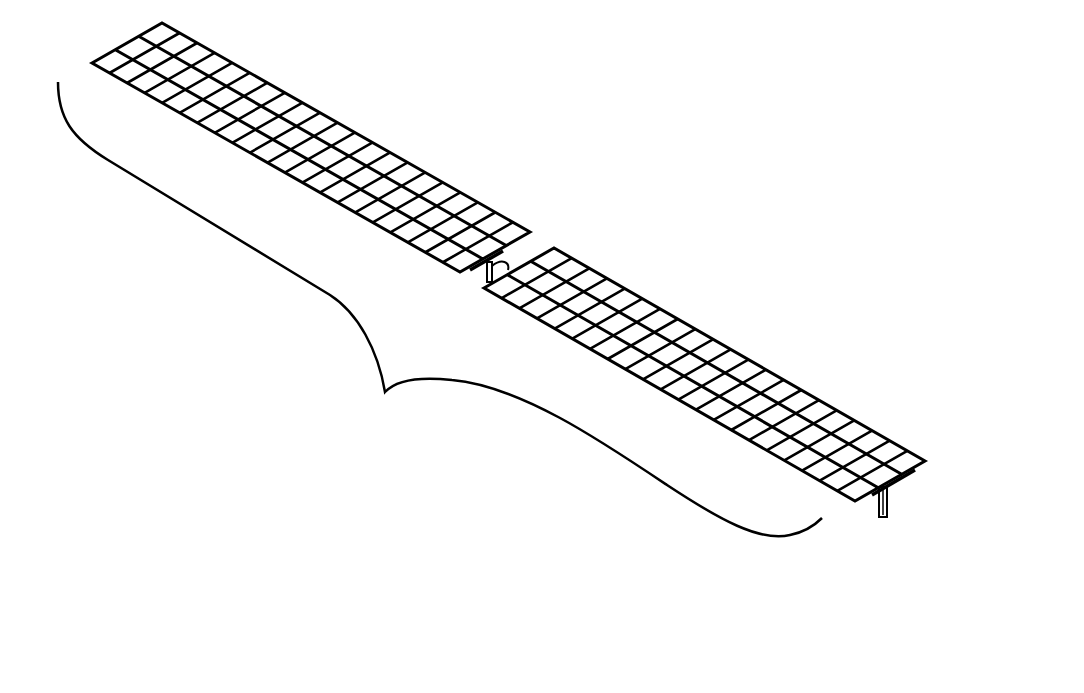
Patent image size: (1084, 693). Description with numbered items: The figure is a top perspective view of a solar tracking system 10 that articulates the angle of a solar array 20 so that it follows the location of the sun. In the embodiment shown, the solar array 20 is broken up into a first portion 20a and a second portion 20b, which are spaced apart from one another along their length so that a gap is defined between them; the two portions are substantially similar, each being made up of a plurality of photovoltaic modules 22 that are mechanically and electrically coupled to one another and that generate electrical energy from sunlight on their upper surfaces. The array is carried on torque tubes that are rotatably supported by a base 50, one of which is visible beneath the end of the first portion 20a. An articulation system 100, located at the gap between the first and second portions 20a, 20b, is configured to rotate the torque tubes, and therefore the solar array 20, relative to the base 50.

The solar tracking system 10 is at (806, 94).
The solar array 20 is at (385, 392).
The first portion 20a is at (775, 363).
The second portion 20b is at (298, 96).
The photovoltaic module 22 is at (835, 425).
The base 50 is at (890, 503).
The articulation system 100 is at (507, 268).